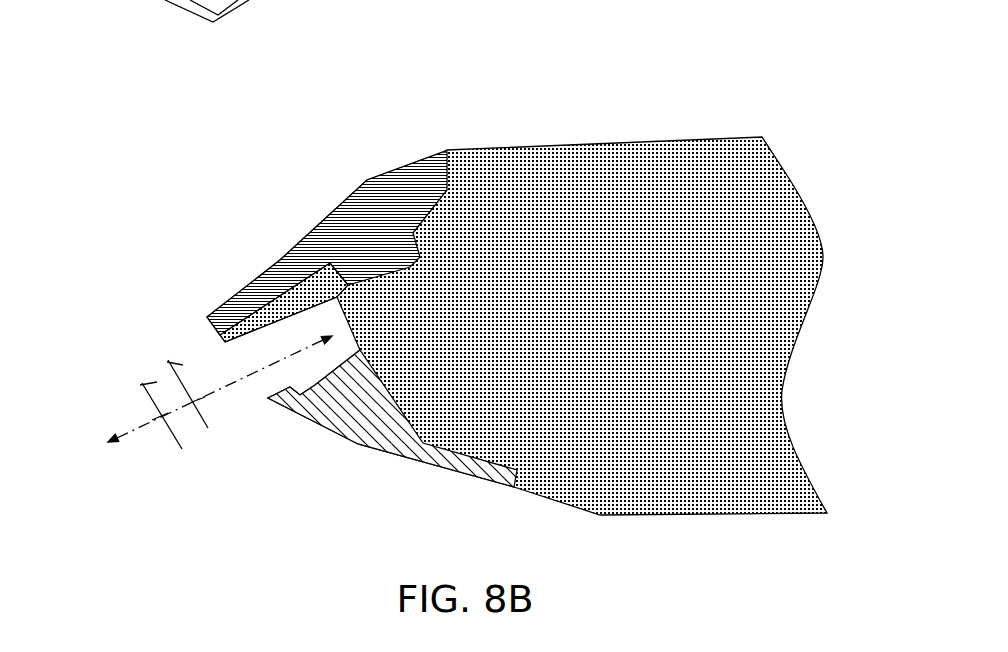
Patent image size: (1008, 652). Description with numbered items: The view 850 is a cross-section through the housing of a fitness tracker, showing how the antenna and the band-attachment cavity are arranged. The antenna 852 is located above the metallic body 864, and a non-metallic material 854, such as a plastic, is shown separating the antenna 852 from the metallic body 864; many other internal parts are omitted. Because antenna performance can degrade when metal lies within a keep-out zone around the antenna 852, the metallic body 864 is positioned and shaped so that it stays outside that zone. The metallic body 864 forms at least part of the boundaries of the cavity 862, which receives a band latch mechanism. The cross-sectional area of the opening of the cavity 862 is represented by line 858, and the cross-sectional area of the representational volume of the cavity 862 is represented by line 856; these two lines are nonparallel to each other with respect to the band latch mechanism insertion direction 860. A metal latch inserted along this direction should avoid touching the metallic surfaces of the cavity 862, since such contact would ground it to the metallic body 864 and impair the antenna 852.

The view 850 is at (823, 105).
The antenna 852 is at (347, 230).
The non-metallic material 854 is at (293, 307).
The line representing cross-sectional area of representational volume of the cavity 856 is at (168, 360).
The line representing cross-sectional area of opening of the cavity 858 is at (142, 383).
The band latch mechanism insertion direction 860 is at (242, 385).
The cavity 862 is at (303, 361).
The metallic body 864 is at (360, 446).